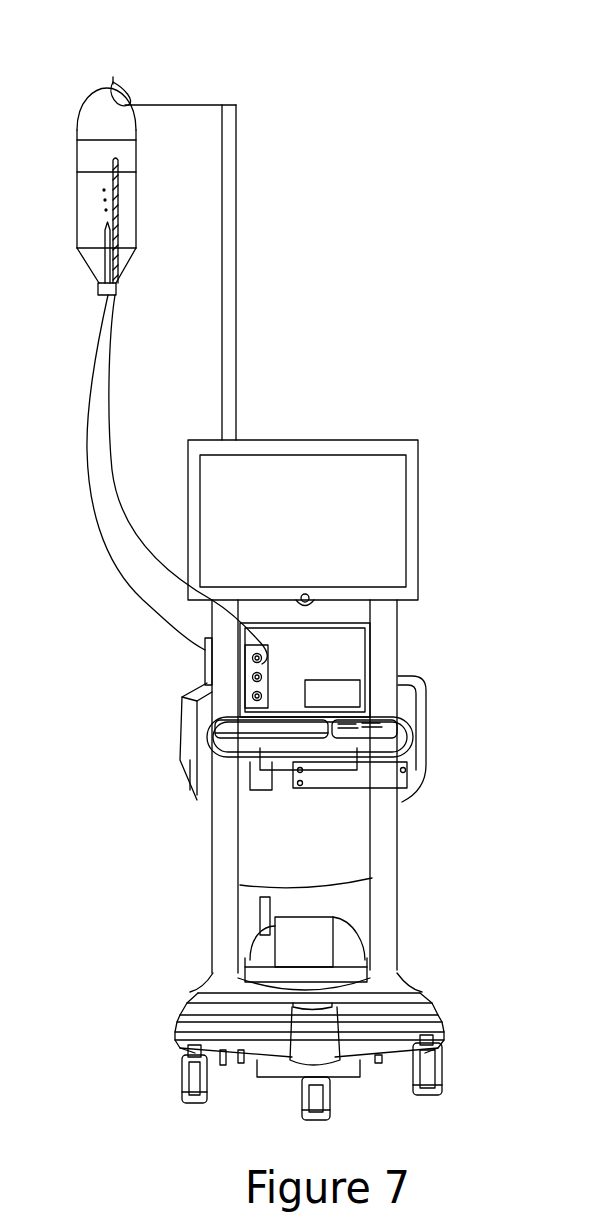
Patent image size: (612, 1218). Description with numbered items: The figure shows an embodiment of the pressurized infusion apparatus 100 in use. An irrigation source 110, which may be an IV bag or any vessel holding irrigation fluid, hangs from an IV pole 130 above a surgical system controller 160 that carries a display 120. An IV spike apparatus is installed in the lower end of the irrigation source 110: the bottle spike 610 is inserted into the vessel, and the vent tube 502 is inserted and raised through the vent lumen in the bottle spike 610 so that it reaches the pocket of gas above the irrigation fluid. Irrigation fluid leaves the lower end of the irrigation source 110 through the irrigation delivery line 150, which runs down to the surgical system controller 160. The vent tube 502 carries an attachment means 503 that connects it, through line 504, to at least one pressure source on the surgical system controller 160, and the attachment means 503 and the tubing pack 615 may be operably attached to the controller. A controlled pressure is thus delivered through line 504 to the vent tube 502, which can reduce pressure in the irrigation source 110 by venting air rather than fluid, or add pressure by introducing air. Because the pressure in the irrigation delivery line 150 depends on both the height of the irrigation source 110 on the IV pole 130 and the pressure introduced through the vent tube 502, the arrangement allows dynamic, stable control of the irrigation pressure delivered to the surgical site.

The pressurized infusion apparatus 100 is at (240, 89).
The irrigation source 110 is at (97, 213).
The display 120 is at (200, 483).
The IV pole 130 is at (236, 388).
The irrigation delivery line 150 is at (87, 437).
The surgical system controller 160 is at (400, 845).
The vent tube 502 is at (119, 216).
The attachment means 503 is at (270, 664).
The line 504 is at (265, 652).
The bottle spike 610 is at (123, 264).
The tubing pack 615 is at (205, 650).